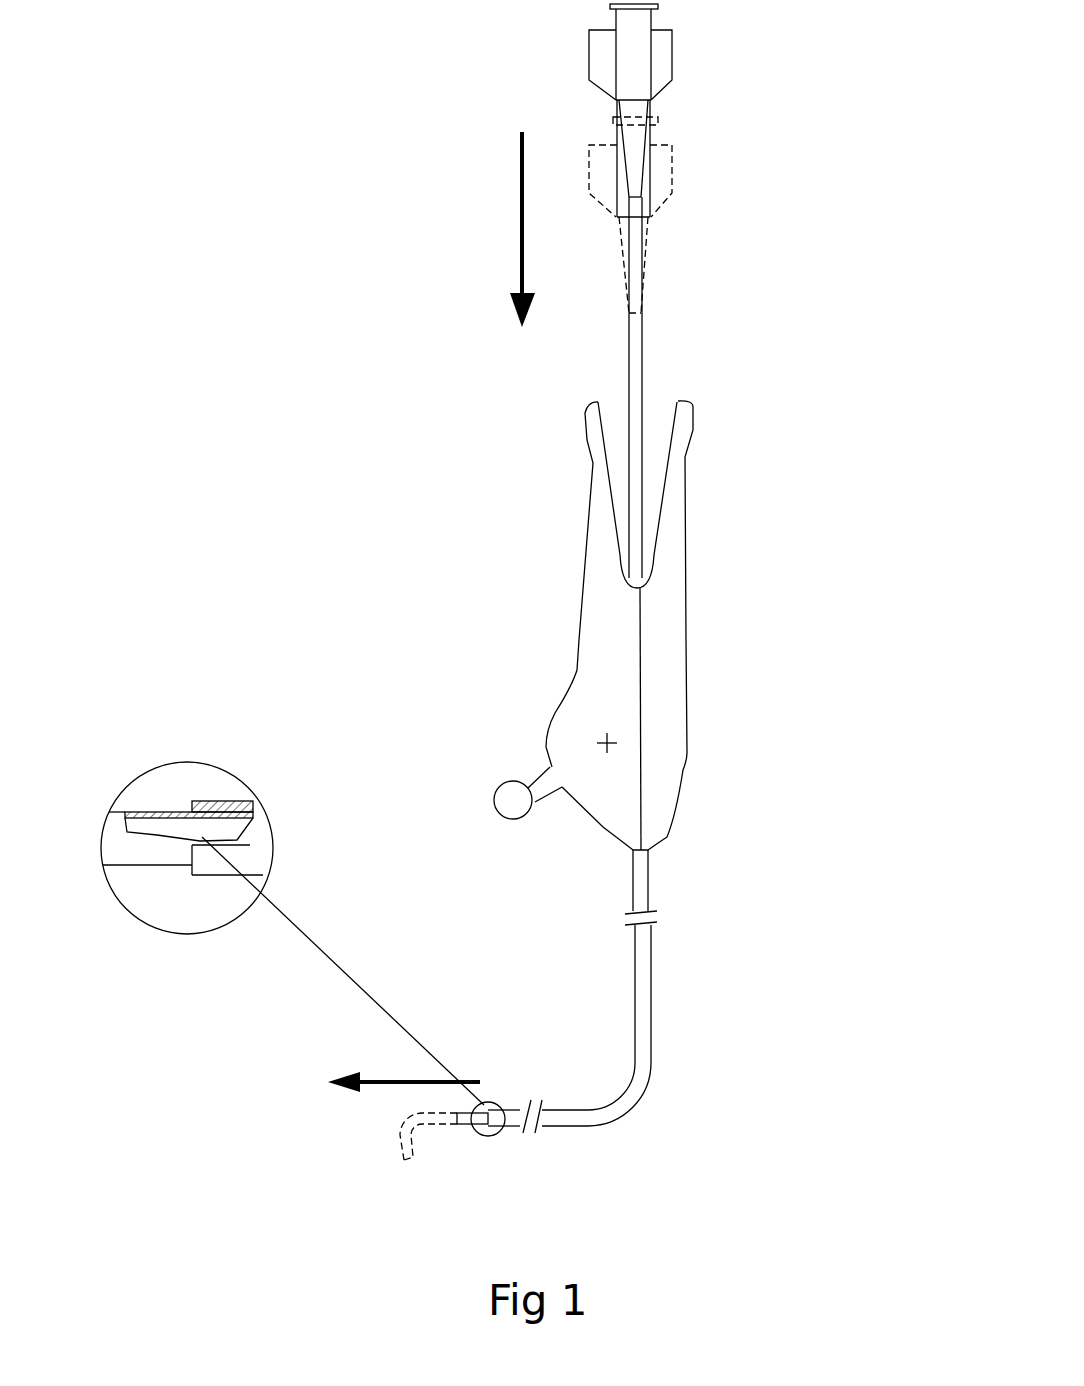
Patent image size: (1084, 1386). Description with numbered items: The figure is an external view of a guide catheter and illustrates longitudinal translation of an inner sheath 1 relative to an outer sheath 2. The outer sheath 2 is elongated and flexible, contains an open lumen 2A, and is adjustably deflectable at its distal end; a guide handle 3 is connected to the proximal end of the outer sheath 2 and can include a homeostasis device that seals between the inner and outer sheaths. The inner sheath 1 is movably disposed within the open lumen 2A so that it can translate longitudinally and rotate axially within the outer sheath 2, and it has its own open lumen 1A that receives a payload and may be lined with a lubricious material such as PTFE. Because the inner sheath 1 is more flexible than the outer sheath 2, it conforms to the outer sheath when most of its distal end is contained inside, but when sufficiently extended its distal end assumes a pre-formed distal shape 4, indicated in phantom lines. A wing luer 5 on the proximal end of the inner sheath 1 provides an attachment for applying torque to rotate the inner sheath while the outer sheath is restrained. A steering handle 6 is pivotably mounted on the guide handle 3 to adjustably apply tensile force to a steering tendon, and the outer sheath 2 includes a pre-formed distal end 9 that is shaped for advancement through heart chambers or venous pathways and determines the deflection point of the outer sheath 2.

The inner sheath 1 is at (439, 1181).
The open lumen 1A is at (230, 823).
The outer sheath 2 is at (572, 991).
The open lumen 2A is at (254, 774).
The guide handle 3 is at (711, 625).
The pre-formed distal shape 4 is at (400, 1120).
The wing luer 5 is at (690, 291).
The steering handle 6 is at (488, 765).
The pre-formed distal end 9 is at (705, 1120).